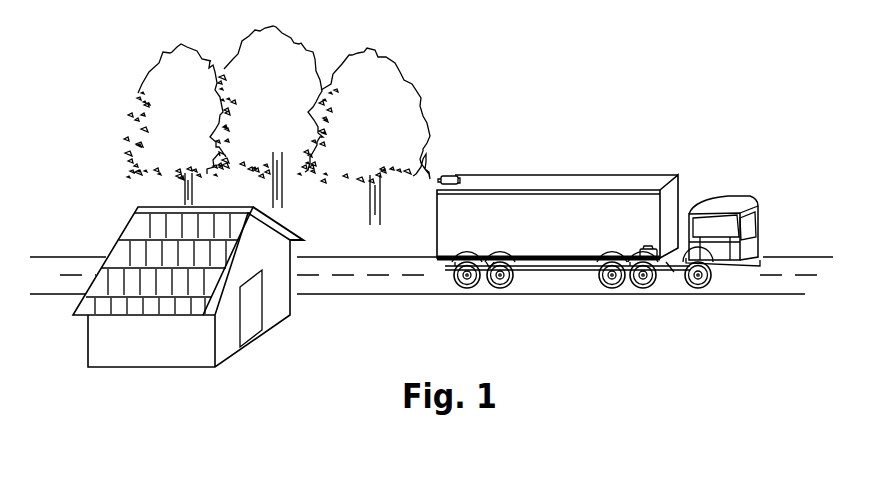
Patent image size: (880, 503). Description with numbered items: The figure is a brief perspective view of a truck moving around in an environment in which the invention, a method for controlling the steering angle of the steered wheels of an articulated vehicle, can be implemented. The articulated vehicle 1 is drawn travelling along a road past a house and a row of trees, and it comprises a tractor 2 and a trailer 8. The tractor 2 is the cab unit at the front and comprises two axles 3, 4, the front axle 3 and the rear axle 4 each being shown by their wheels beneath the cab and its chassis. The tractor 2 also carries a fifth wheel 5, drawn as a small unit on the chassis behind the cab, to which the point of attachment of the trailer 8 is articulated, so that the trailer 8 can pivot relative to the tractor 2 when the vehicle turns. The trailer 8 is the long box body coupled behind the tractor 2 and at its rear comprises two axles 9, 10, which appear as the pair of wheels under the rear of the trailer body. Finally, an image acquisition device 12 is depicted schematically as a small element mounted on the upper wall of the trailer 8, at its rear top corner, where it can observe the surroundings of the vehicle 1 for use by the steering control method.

The vehicle 1 is at (637, 135).
The tractor 2 is at (756, 213).
The axle 3 is at (703, 291).
The axle 4 is at (639, 289).
The fifth wheel 5 is at (654, 247).
The trailer 8 is at (563, 182).
The axle 9 is at (453, 287).
The axle 10 is at (515, 285).
The image acquisition device 12 is at (450, 174).